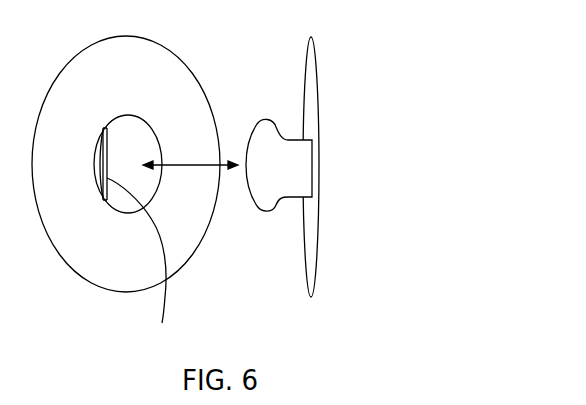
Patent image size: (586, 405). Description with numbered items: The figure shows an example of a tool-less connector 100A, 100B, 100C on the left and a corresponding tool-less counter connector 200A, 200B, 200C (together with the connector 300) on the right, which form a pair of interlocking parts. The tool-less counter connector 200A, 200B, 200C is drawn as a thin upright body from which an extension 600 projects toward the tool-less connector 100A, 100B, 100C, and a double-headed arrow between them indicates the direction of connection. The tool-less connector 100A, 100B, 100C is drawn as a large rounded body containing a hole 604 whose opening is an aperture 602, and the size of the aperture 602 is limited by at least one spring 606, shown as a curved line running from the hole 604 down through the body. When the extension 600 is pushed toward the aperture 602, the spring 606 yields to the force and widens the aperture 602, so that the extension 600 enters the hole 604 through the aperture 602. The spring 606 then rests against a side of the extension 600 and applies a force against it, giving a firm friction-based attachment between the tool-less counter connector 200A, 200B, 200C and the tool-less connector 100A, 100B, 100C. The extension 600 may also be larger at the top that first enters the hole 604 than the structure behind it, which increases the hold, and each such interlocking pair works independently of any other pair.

The tool-less connector 100A is at (167, 147).
The tool-less connector 100B is at (167, 147).
The tool-less connector 100C is at (107, 35).
The tool-less counter connector 200A is at (431, 150).
The tool-less counter connector 200B is at (431, 150).
The tool-less counter connector 200C is at (431, 150).
The connector 300 is at (313, 40).
The extension 600 is at (295, 175).
The aperture 602 is at (146, 118).
The hole 604 is at (152, 158).
The spring 606 is at (141, 268).